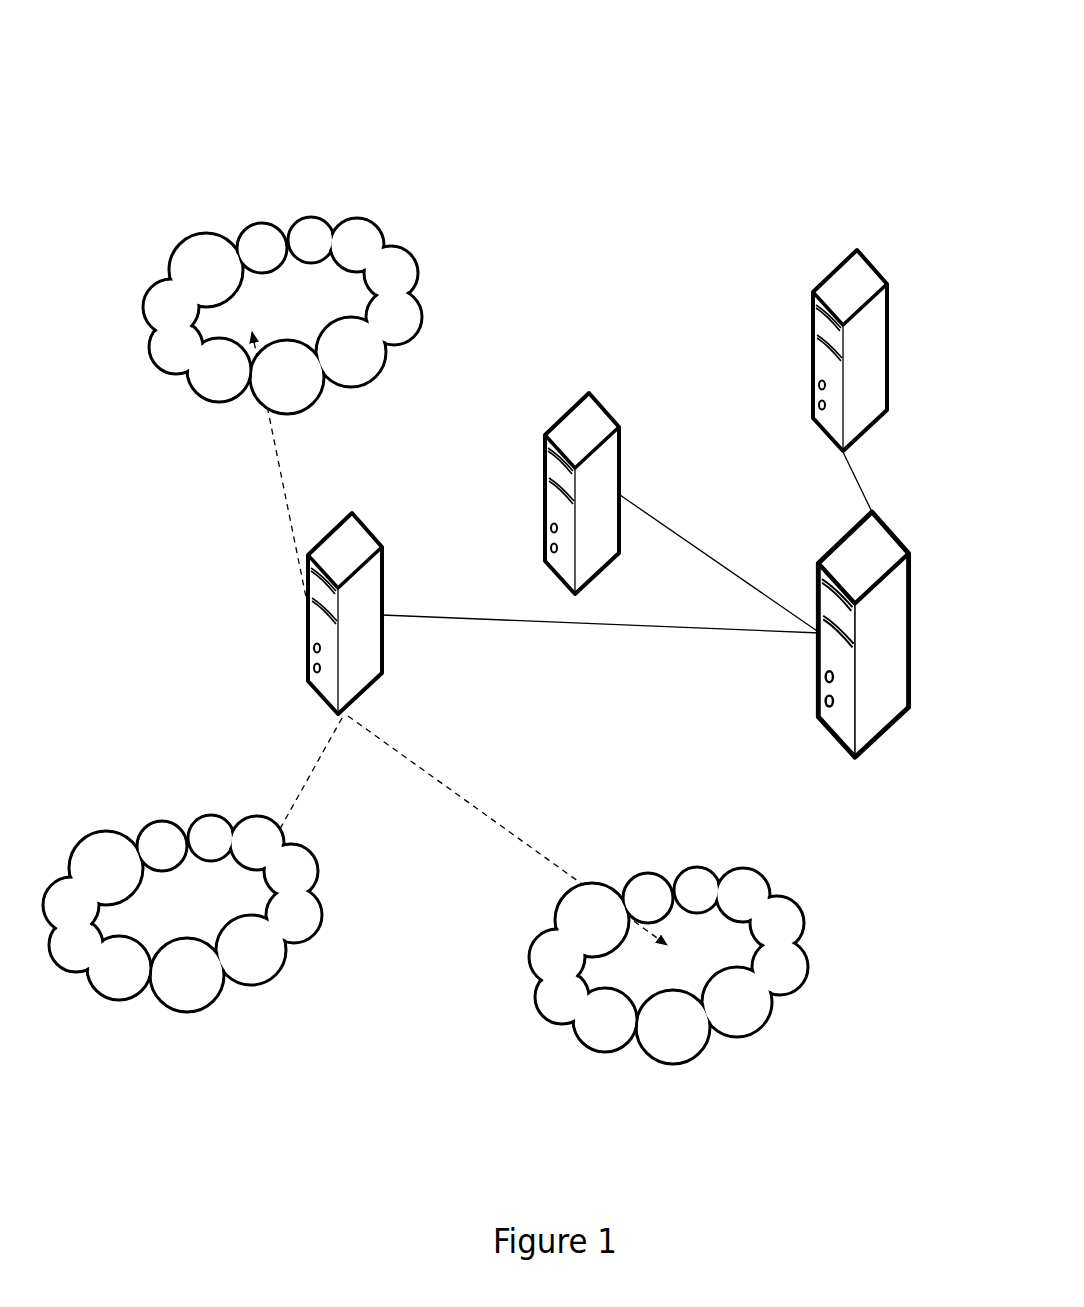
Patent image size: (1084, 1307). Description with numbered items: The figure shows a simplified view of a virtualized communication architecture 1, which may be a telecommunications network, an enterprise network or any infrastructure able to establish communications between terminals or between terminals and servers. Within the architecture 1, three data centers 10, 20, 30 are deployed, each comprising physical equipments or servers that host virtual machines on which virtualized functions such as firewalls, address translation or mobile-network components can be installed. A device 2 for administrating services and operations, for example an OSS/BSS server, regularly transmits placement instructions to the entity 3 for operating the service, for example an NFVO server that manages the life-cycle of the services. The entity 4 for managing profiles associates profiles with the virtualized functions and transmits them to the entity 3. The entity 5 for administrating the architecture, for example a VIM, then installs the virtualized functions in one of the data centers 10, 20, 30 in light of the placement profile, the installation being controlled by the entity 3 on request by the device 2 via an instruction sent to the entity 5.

The virtualized communication architecture 1 is at (573, 100).
The device for administrating services and operations 2 is at (880, 270).
The entity for operating the service 3 is at (907, 550).
The entity for managing profiles 4 is at (586, 390).
The entity for administrating the virtualized architecture 5 is at (344, 515).
The data center 10 is at (777, 887).
The data center 20 is at (217, 812).
The data center 30 is at (402, 242).